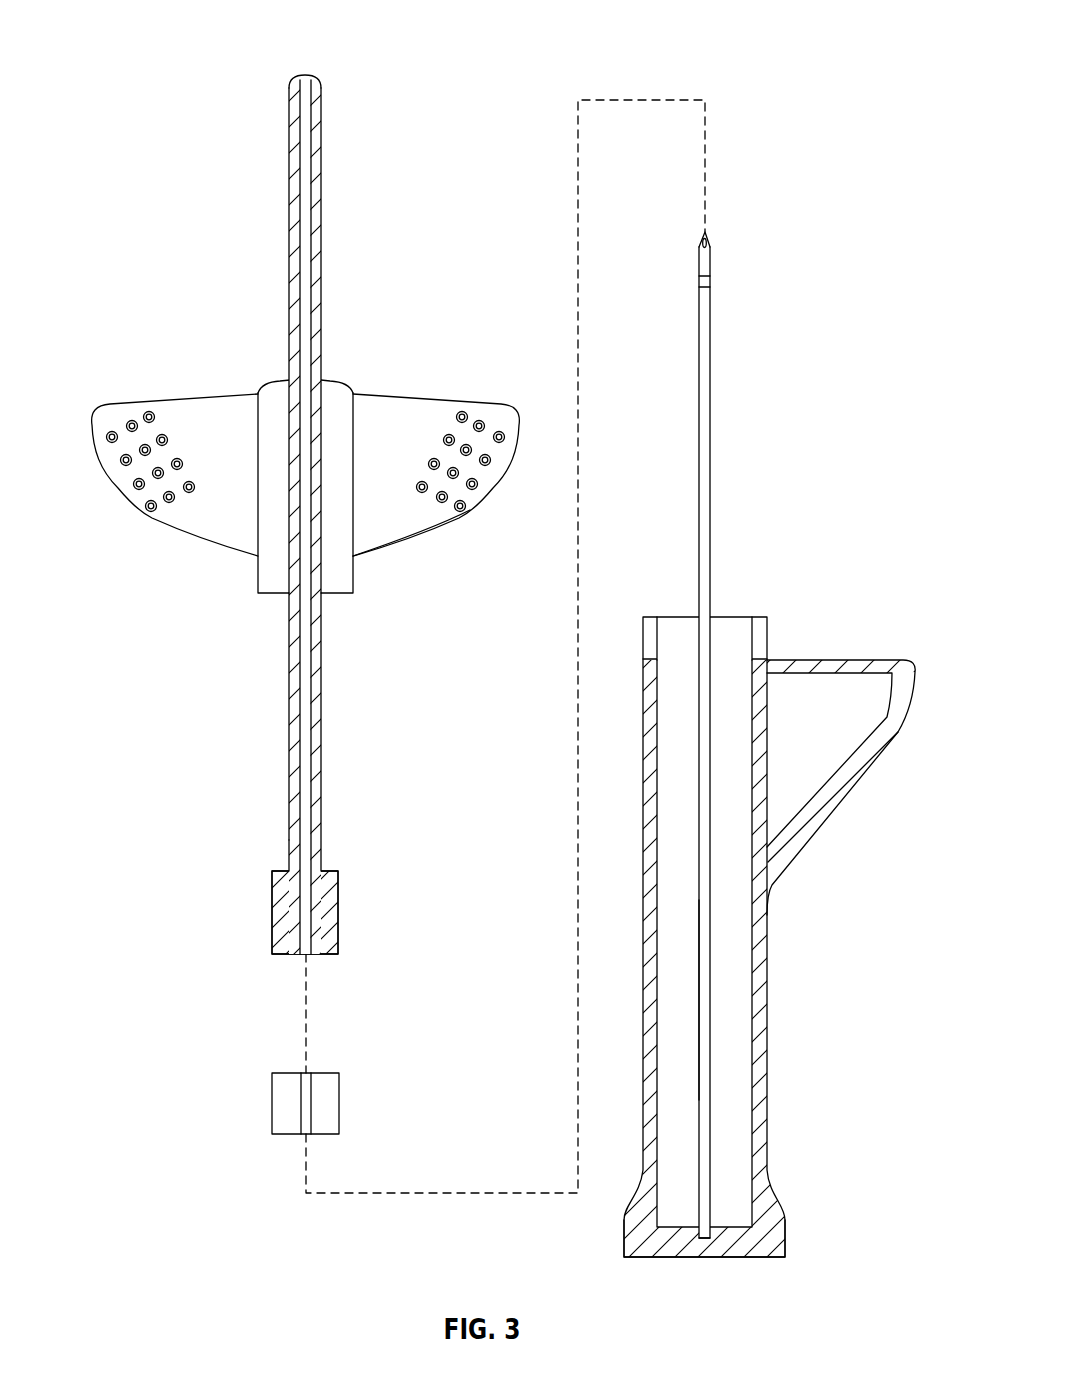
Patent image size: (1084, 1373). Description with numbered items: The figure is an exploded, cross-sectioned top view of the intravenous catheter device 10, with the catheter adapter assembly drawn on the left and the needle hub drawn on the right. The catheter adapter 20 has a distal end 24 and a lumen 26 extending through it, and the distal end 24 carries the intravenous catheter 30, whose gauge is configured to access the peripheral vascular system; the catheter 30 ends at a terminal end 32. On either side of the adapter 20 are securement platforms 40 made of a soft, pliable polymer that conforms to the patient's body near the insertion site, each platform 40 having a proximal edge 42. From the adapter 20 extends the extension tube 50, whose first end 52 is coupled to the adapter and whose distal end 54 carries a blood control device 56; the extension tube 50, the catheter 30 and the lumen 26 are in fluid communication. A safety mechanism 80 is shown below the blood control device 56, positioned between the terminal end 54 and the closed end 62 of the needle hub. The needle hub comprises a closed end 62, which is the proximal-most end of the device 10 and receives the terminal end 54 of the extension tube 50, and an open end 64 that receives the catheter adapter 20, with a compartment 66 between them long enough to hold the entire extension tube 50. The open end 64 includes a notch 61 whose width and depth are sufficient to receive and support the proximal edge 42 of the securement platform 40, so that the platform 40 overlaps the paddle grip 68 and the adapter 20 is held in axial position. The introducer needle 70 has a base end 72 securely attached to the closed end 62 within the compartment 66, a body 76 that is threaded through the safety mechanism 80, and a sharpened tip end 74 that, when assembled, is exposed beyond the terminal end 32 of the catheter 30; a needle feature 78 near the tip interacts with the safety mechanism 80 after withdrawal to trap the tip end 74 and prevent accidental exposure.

The intravenous catheter device 10 is at (203, 29).
The catheter adapter 20 is at (308, 492).
The distal end 24 is at (282, 386).
The lumen 26 is at (308, 450).
The intravenous catheter 30 is at (310, 500).
The terminal end 32 is at (318, 80).
The securement platform 40 is at (510, 408).
The proximal edge 42 is at (412, 540).
The extension tube 50 is at (323, 693).
The first end 52 is at (290, 598).
The distal end 54 is at (289, 857).
The blood control device 56 is at (340, 915).
The notch 61 is at (752, 904).
The closed end 62 is at (623, 1243).
The open end 64 is at (766, 617).
The compartment 66 is at (678, 1047).
The paddle grip 68 is at (884, 756).
The introducer needle 70 is at (712, 1018).
The base end 72 is at (710, 1243).
The sharpened tip end 74 is at (708, 240).
The body 76 is at (761, 756).
The needle feature 78 is at (712, 283).
The safety mechanism 80 is at (272, 1103).